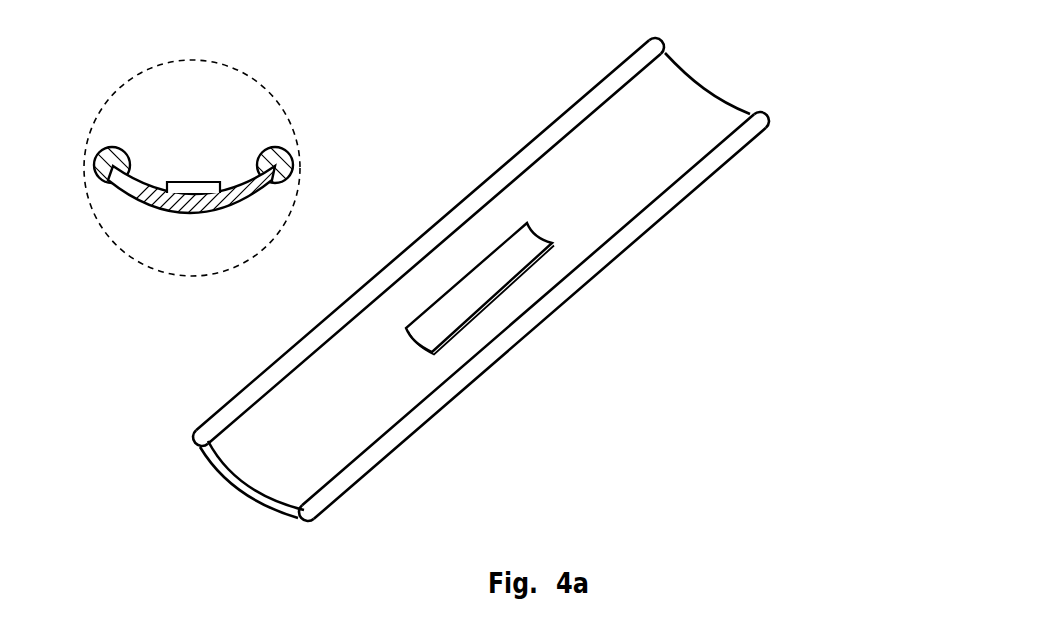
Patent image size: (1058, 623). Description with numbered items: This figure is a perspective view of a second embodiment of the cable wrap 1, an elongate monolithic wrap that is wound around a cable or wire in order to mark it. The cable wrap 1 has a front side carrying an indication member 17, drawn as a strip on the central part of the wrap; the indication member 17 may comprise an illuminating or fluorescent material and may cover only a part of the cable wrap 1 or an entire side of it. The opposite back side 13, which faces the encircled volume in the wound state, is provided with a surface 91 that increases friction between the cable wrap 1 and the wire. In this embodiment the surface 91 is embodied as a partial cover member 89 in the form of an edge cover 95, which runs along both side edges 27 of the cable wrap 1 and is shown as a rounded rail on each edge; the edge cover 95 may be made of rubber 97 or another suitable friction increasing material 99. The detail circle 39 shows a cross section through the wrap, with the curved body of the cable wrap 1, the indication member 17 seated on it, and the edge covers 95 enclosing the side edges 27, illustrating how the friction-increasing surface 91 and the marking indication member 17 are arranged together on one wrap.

The cable wrap 1 is at (511, 87).
The back side 13 is at (237, 511).
The indication member 17 is at (192, 182).
The side edges 27 is at (100, 178).
The circle 39 is at (236, 69).
The partial cover member 89 is at (100, 163).
The surface 91 is at (762, 99).
The edge cover 95 is at (626, 58).
The rubber 97 is at (612, 316).
The friction increasing material 99 is at (745, 152).